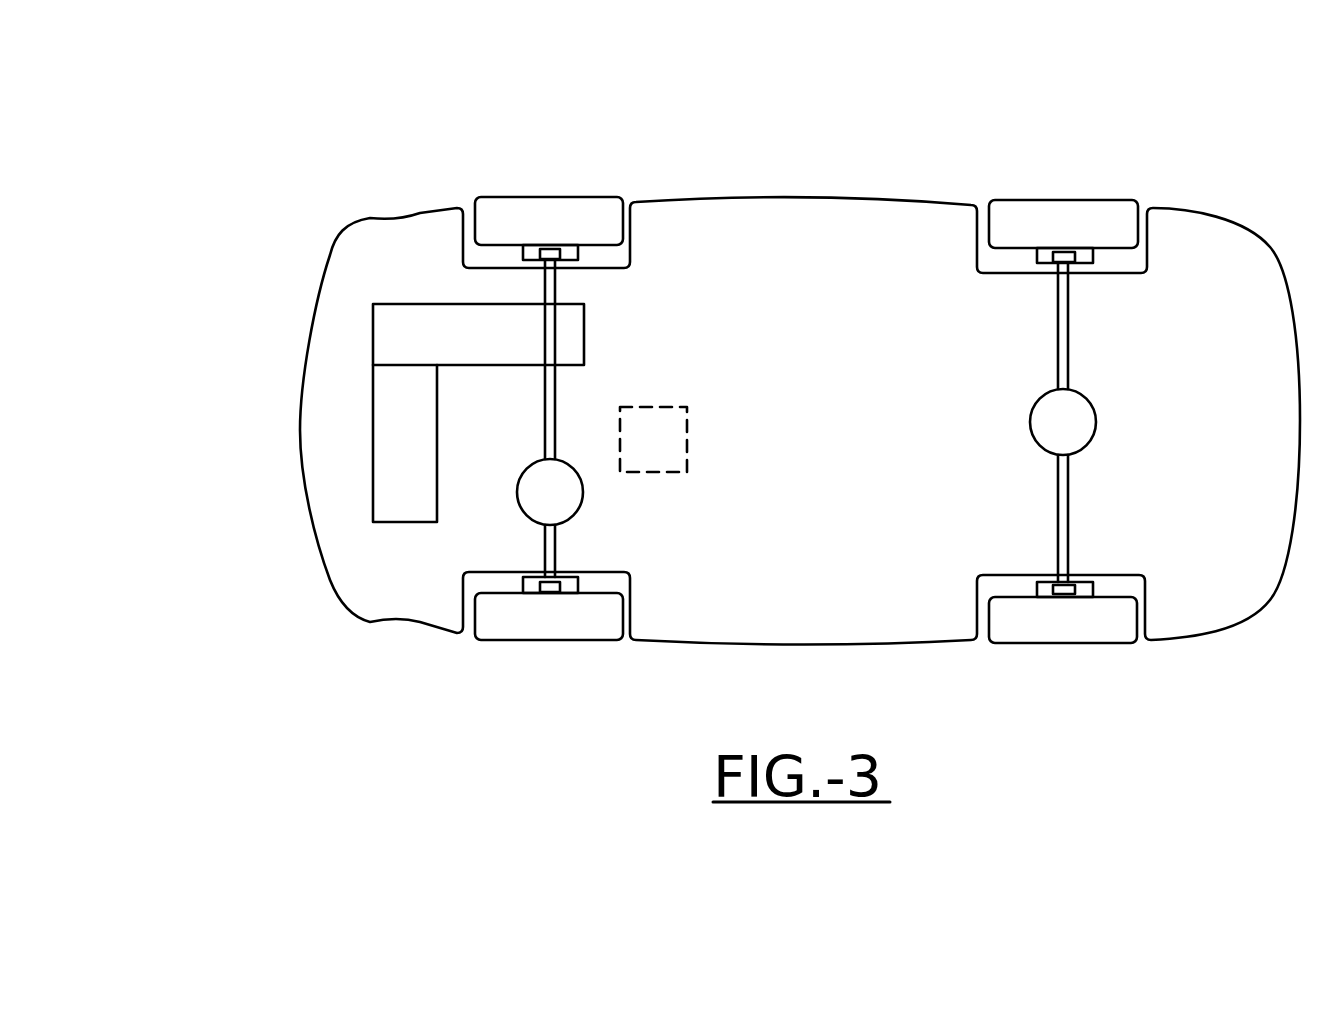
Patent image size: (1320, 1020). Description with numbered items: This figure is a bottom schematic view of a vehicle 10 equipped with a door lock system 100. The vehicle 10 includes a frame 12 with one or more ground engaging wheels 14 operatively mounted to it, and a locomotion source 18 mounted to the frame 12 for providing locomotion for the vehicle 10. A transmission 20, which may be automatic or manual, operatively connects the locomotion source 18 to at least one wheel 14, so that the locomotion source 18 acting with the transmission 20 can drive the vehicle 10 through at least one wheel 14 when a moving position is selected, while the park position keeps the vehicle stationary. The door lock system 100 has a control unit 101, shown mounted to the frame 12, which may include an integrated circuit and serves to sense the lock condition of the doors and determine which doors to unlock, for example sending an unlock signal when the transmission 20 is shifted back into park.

The vehicle 10 is at (242, 143).
The frame 12 is at (822, 218).
The ground engaging wheels 14 is at (553, 218).
The locomotion source 18 is at (395, 443).
The transmission 20 is at (408, 342).
The door lock system 100 is at (728, 399).
The control unit 101 is at (668, 442).